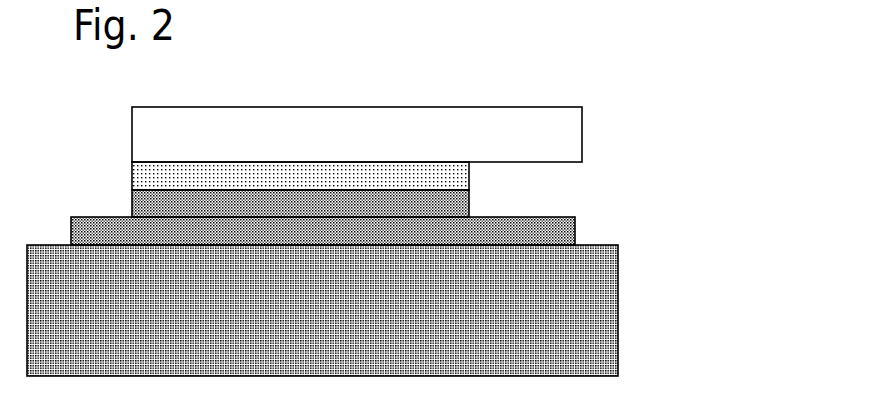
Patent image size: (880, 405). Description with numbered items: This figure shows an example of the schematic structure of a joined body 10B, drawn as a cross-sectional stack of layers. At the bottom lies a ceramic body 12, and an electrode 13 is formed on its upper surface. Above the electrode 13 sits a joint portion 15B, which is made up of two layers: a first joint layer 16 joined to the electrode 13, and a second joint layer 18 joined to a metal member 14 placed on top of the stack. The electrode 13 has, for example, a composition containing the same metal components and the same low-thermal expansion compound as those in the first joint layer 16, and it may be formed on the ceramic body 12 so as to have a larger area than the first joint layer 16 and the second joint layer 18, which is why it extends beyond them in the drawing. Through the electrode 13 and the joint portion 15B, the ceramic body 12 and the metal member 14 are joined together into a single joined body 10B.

The joined body 10B is at (727, 80).
The ceramic body 12 is at (618, 296).
The electrode 13 is at (575, 230).
The metal member 14 is at (582, 135).
The joint portion 15B is at (472, 187).
The first joint layer 16 is at (469, 204).
The second joint layer 18 is at (469, 178).